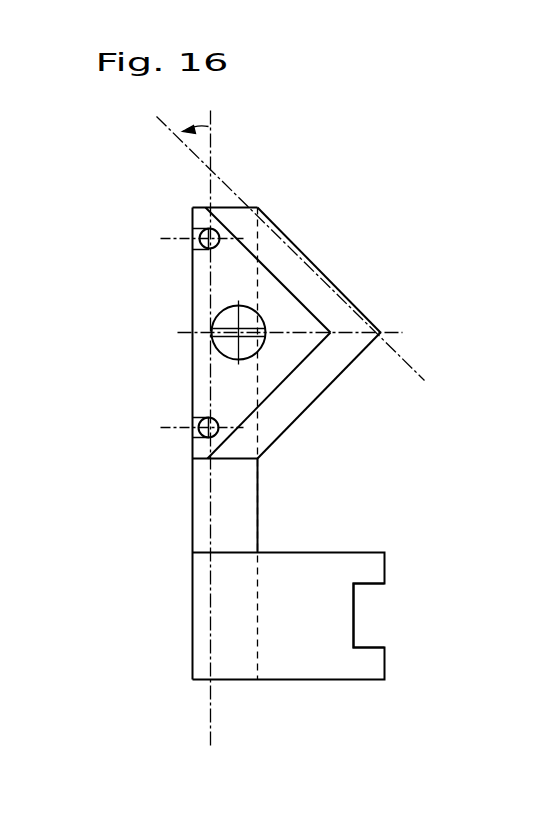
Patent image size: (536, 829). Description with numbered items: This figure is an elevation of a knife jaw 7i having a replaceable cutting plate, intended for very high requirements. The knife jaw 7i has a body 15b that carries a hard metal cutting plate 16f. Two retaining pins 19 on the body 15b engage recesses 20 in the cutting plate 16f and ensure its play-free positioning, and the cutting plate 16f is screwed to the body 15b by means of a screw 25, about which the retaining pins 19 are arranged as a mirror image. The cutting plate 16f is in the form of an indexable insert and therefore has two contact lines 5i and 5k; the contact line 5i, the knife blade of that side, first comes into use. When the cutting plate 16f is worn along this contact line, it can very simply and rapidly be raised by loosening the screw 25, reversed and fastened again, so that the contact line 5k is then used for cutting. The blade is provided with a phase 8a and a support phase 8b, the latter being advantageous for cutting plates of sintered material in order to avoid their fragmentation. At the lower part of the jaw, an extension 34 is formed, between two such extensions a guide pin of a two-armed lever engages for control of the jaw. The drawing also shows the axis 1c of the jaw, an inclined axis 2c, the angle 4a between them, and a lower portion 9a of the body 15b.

The center axis 1c is at (215, 445).
The inclined axis 2c is at (307, 260).
The angle 4a is at (197, 142).
The contact line 5i is at (306, 245).
The contact line 5k is at (336, 383).
The knife jaw 7i is at (188, 475).
The phase 8a is at (275, 413).
The support phase 8b is at (263, 240).
The base portion 9a is at (275, 525).
The body 15b is at (210, 502).
The hard metal cutting plate 16f is at (292, 313).
The retaining pin 19 is at (182, 243).
The recess 20 is at (190, 230).
The screw 25 is at (230, 318).
The extension 34 is at (367, 572).